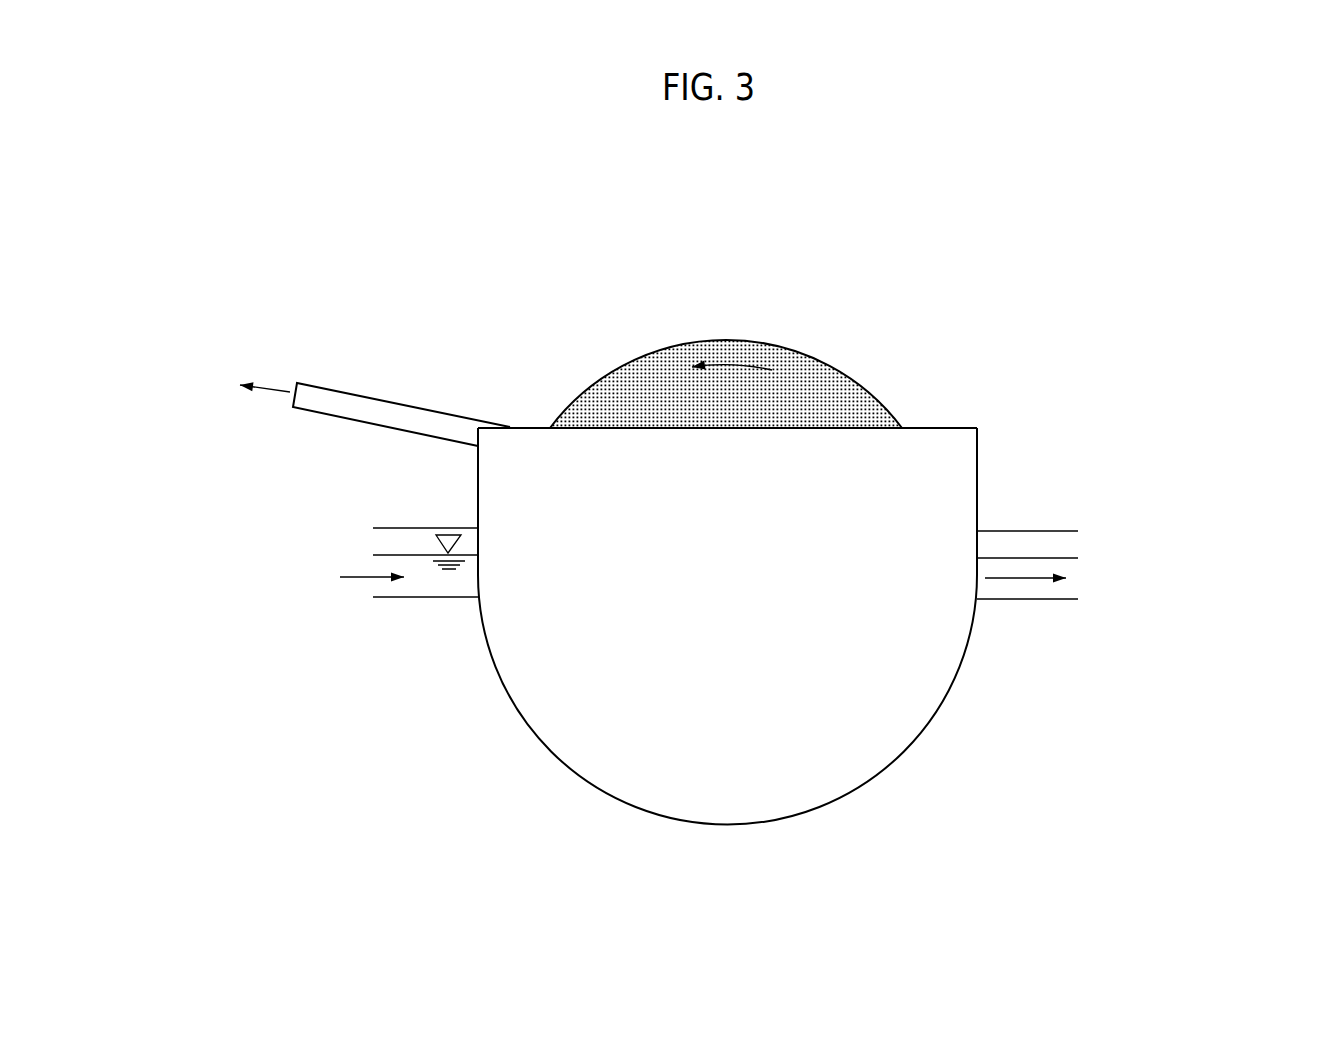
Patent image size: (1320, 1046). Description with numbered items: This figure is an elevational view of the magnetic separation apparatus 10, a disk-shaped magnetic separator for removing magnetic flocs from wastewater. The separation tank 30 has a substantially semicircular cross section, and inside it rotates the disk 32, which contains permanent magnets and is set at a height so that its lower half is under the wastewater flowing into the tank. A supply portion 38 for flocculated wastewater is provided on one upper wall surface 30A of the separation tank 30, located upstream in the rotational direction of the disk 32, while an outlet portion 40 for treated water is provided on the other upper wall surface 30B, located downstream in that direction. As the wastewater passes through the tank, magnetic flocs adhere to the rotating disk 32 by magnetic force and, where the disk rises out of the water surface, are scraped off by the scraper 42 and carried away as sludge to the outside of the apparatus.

The magnetic separation apparatus 10 is at (897, 333).
The separation tank 30 is at (987, 432).
The wall surface 30A is at (477, 468).
The wall surface 30B is at (978, 470).
The disk 32 is at (722, 348).
The supply portion 38 is at (423, 598).
The outlet portion 40 is at (1017, 600).
The scraper 42 is at (392, 408).